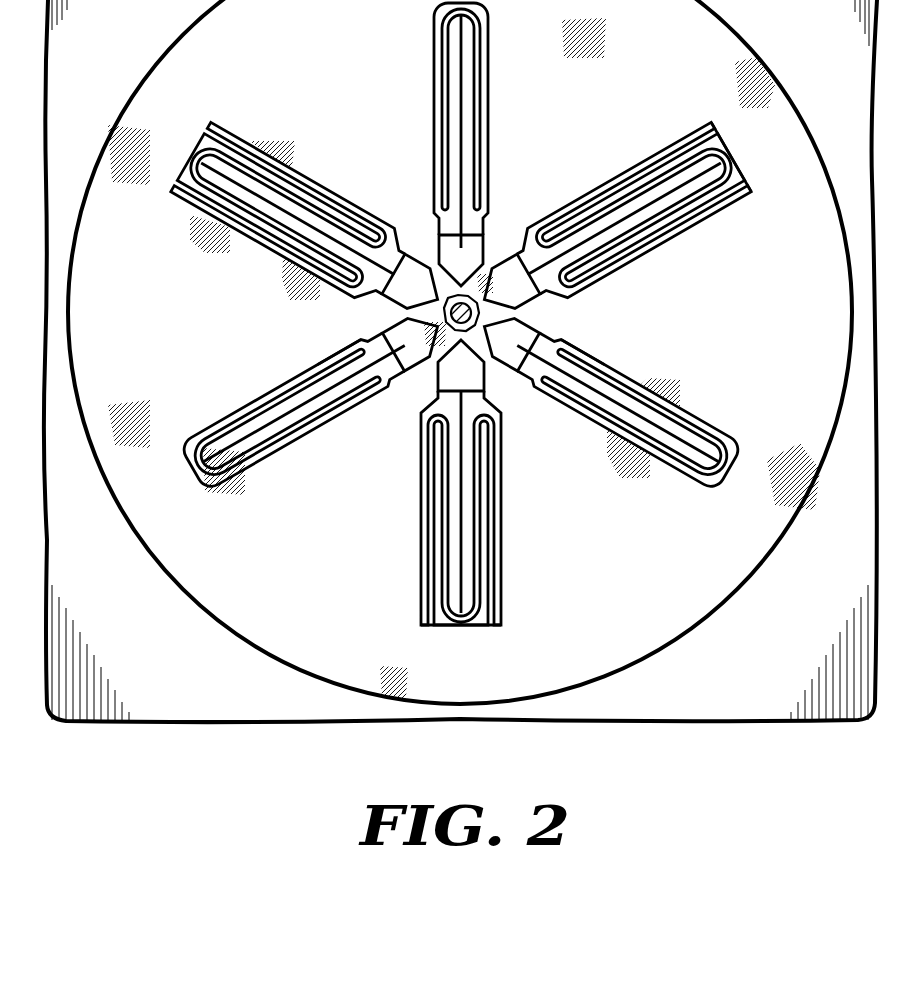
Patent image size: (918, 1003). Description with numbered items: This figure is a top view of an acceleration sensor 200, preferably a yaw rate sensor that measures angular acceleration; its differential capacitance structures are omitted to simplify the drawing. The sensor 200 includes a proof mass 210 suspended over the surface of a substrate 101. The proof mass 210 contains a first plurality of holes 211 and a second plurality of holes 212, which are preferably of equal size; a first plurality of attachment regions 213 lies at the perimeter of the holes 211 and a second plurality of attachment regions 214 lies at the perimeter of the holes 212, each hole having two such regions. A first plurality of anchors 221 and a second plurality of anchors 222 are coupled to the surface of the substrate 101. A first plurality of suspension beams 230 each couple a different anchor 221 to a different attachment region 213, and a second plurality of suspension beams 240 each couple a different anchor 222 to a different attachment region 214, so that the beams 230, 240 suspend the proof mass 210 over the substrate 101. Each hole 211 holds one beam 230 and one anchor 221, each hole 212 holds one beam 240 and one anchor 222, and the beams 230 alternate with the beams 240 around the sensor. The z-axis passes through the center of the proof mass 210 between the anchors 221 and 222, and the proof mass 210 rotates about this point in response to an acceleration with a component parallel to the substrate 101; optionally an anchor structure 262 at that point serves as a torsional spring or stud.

The substrate 101 is at (818, 672).
The acceleration sensor 200 is at (481, 409).
The proof mass 210 is at (161, 551).
The first plurality of holes 211 is at (627, 175).
The second plurality of holes 212 is at (434, 117).
The first plurality of attachment regions 213 is at (762, 181).
The second plurality of attachment regions 214 is at (387, 408).
The first plurality of anchors 221 is at (506, 278).
The second plurality of anchors 222 is at (470, 249).
The first plurality of suspension beams 230 is at (654, 243).
The second plurality of suspension beams 240 is at (488, 105).
The anchor structure 262 is at (480, 320).